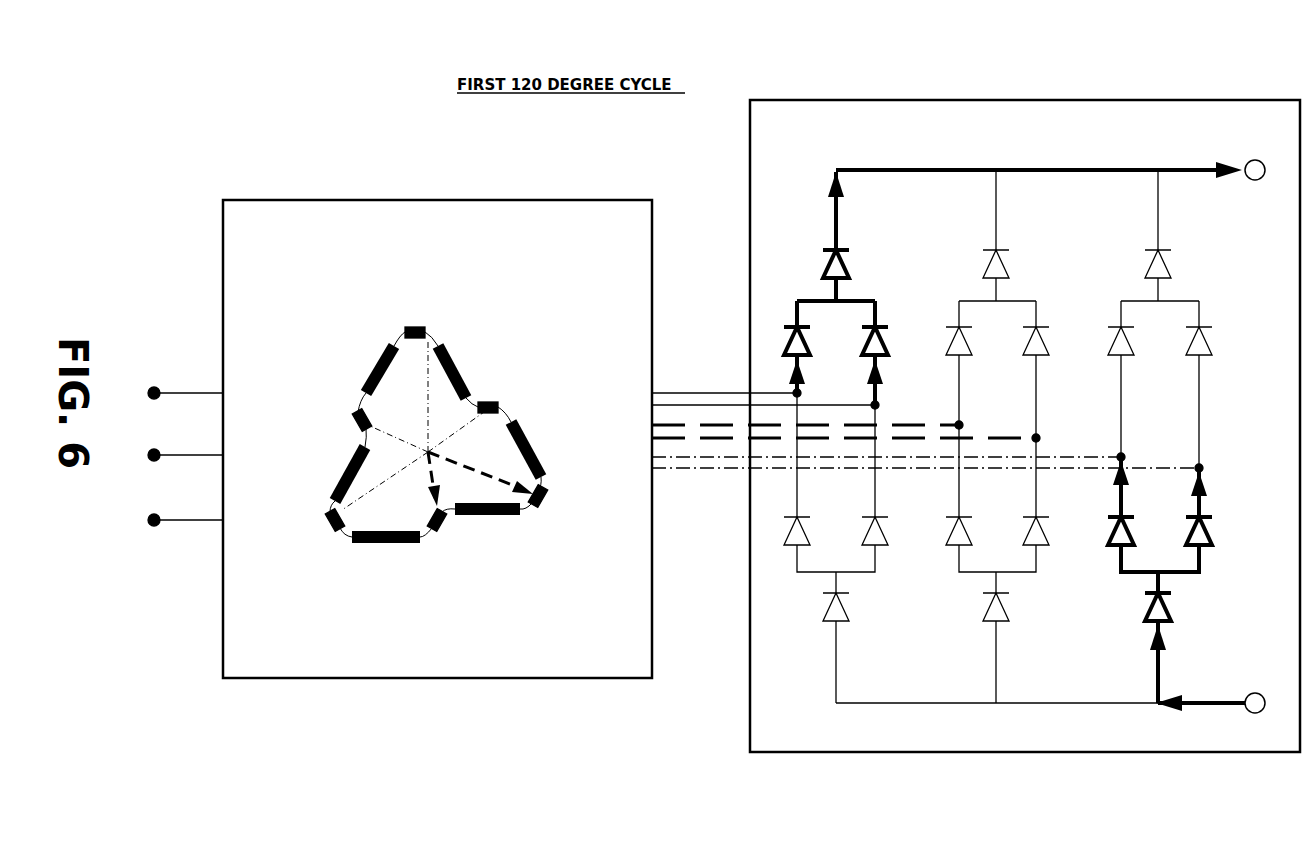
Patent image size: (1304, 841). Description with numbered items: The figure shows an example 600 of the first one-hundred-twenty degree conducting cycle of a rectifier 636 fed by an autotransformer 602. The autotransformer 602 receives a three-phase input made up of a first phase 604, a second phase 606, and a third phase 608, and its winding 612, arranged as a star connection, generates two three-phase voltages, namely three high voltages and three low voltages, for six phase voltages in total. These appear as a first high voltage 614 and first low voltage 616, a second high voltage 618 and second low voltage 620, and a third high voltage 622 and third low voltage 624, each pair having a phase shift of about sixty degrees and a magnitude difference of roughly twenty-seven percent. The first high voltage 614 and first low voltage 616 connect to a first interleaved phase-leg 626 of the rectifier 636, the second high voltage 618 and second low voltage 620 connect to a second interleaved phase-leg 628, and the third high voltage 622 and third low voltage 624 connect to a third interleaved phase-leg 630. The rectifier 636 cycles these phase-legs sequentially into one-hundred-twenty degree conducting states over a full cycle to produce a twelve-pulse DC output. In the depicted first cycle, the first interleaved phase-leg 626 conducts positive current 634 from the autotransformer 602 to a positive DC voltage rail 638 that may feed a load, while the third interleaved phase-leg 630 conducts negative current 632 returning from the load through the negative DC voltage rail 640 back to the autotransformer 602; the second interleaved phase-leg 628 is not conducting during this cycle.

The example of a first 120 degree cycle 600 is at (330, 76).
The autotransformer 602 is at (503, 200).
The first phase 604 is at (192, 393).
The second phase 606 is at (192, 455).
The third phase 608 is at (192, 520).
The winding 612 is at (365, 318).
The first high voltage 614 is at (433, 335).
The first low voltage 616 is at (496, 416).
The second high voltage 618 is at (530, 505).
The second low voltage 620 is at (442, 510).
The third high voltage 622 is at (358, 497).
The third low voltage 624 is at (375, 424).
The first interleaved phase-leg 626 is at (872, 262).
The second interleaved phase-leg 628 is at (1030, 260).
The third interleaved phase-leg 630 is at (1191, 260).
The negative current 632 is at (1158, 665).
The positive current 634 is at (838, 226).
The rectifier 636 is at (1115, 100).
The positive DC voltage rail 638 is at (880, 170).
The negative DC voltage rail 640 is at (872, 703).